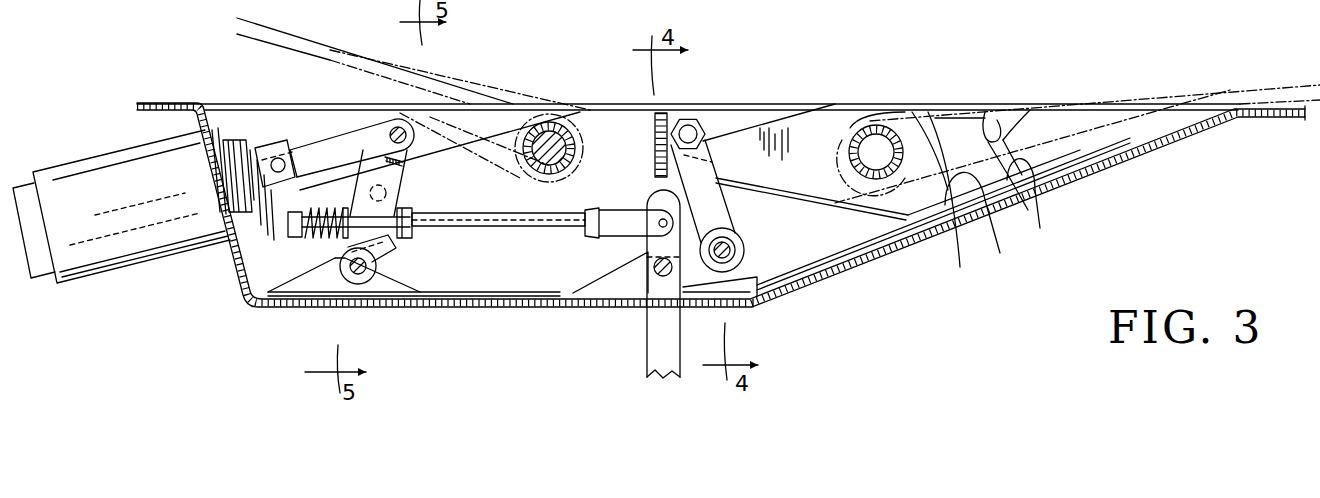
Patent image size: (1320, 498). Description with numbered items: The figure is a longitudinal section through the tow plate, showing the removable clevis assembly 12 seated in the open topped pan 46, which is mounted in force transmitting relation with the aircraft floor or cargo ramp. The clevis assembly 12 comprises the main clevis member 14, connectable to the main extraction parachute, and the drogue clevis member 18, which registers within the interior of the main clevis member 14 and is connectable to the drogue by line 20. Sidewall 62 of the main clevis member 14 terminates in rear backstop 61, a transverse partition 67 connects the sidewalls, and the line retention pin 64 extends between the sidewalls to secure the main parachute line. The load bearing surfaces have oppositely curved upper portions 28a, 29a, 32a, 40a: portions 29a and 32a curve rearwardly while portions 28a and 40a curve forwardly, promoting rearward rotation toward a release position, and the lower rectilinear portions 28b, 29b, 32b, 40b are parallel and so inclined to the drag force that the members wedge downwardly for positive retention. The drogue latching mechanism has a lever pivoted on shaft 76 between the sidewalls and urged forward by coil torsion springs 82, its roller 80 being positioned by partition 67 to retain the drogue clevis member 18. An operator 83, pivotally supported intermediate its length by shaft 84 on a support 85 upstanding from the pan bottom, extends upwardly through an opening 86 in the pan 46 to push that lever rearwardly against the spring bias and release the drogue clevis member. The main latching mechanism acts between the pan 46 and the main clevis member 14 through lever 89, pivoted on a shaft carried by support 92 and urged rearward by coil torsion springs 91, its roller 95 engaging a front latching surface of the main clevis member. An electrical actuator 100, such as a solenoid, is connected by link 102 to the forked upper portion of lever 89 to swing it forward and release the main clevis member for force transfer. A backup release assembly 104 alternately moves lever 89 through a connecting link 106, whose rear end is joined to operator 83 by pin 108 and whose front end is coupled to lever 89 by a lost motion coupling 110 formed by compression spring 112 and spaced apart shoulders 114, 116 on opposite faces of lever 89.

The electrical actuator 100 is at (93, 182).
The link 102 is at (318, 150).
The roller 95 is at (362, 187).
The lost motion coupling 110 is at (339, 203).
The compression spring 112 is at (253, 273).
The lever 89 is at (403, 157).
The connecting link 106 is at (484, 216).
The pin 108 is at (662, 218).
The line retention pin 64 is at (553, 143).
The main clevis member 14 is at (598, 103).
The drogue clevis member 18 is at (816, 108).
The line 20 is at (1297, 92).
The transverse partition 67 is at (655, 131).
The roller 80 is at (700, 128).
The shaft 76 is at (728, 242).
The clevis assembly 12 is at (765, 133).
The sidewall 62 is at (845, 231).
The coil torsion springs 82 is at (768, 272).
The curved upper portion of load bearing surface 40a is at (911, 114).
The lower rectilinear portion of load bearing surface 40b is at (987, 245).
The curved upper portion of inner load bearing surface 32a is at (927, 117).
The lower rectilinear portion of inner load bearing surface 32b is at (957, 250).
The rear backstop 61 is at (958, 115).
The curved upper portion of rear load bearing surface 28a is at (988, 120).
The lower rectilinear portion of rear load bearing surface 28b is at (1040, 196).
The curved upper portion of backstop surface 29a is at (1005, 138).
The lower rectilinear portion of backstop surface 29b is at (1018, 208).
The open topped pan 46 is at (851, 280).
The support 85 is at (628, 268).
The operator 83 is at (645, 323).
The shaft 84 is at (672, 273).
The opening 86 is at (718, 312).
The backup release assembly 104 is at (503, 254).
The support 92 is at (418, 282).
The shoulder 114 is at (387, 243).
The coil torsion springs 91 is at (350, 288).
The shoulder 116 is at (342, 252).